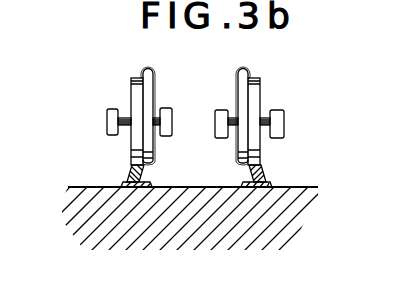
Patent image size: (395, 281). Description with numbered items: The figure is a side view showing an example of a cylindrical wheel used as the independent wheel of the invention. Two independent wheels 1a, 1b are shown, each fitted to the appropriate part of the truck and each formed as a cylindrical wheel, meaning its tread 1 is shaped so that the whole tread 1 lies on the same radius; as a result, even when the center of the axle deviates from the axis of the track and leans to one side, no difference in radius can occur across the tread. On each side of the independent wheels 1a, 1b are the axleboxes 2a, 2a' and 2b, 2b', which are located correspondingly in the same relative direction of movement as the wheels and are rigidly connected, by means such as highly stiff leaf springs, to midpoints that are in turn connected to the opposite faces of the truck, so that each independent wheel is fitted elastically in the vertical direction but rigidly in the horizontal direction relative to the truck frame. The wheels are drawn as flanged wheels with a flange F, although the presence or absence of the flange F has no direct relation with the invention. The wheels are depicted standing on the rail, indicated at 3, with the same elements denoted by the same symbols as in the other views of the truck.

The tread 1 is at (137, 79).
The independent wheel 1a is at (272, 97).
The independent wheel 1b is at (126, 91).
The axlebox 2a is at (296, 127).
The axlebox 2a' is at (216, 148).
The axlebox 2b is at (91, 127).
The axlebox 2b' is at (176, 142).
The foot/base of support post 3 is at (131, 173).
The flange F is at (145, 77).